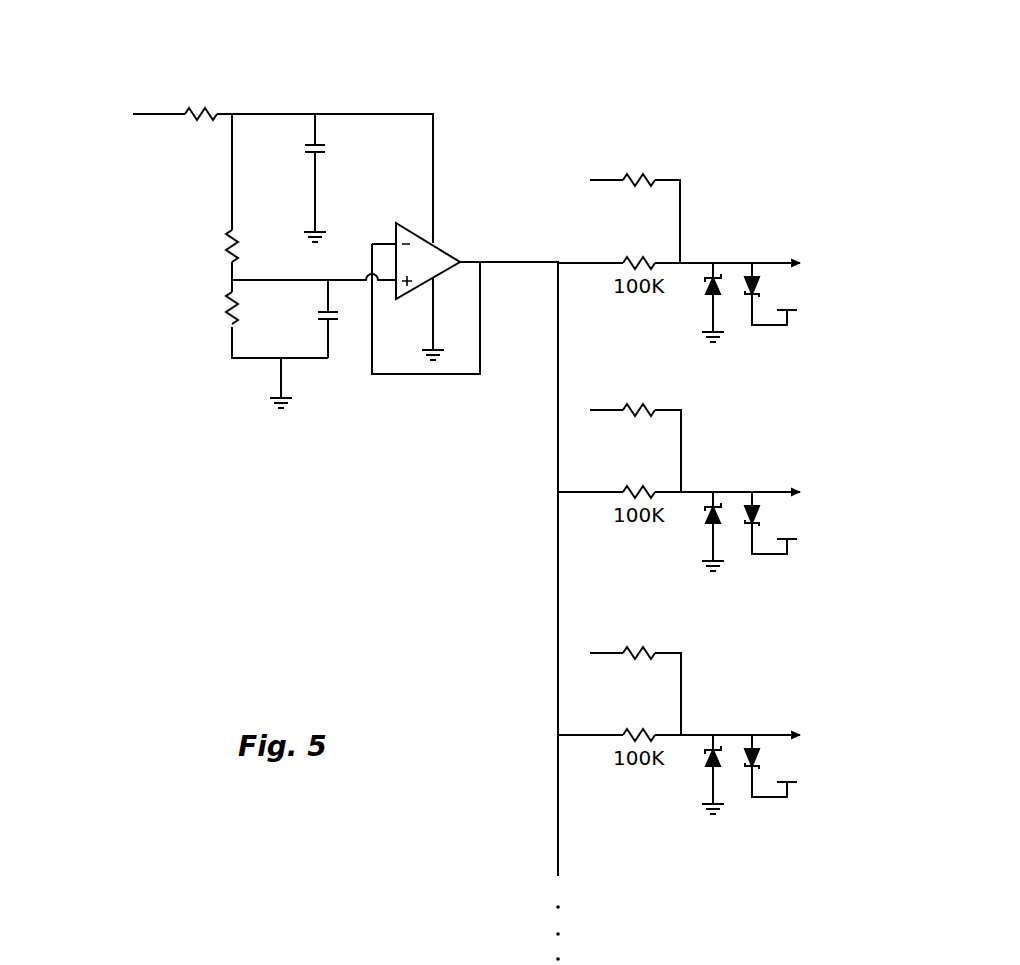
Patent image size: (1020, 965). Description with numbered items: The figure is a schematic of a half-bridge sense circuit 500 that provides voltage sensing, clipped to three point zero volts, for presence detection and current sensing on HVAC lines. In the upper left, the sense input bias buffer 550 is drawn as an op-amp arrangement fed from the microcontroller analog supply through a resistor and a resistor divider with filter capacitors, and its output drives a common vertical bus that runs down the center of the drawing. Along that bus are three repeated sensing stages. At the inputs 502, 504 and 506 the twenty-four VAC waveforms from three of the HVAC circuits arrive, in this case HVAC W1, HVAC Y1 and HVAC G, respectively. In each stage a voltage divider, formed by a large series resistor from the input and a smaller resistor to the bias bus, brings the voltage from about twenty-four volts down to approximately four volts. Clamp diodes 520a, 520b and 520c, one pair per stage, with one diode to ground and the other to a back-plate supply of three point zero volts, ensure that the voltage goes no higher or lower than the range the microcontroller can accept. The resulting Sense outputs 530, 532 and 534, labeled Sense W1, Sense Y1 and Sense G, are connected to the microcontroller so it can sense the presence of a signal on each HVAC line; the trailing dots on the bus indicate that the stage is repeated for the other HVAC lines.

The half-bridge sense circuit 500 is at (368, 516).
The sense input bias buffer 550 is at (540, 77).
The input for HVAC W1 502 is at (586, 181).
The input for HVAC Y1 504 is at (586, 410).
The input for HVAC G 506 is at (586, 653).
The clamp diodes 520a is at (686, 300).
The clamp diodes 520b is at (686, 530).
The clamp diodes 520c is at (686, 774).
The sense output 530 is at (805, 264).
The sense output 532 is at (805, 493).
The sense output 534 is at (805, 737).